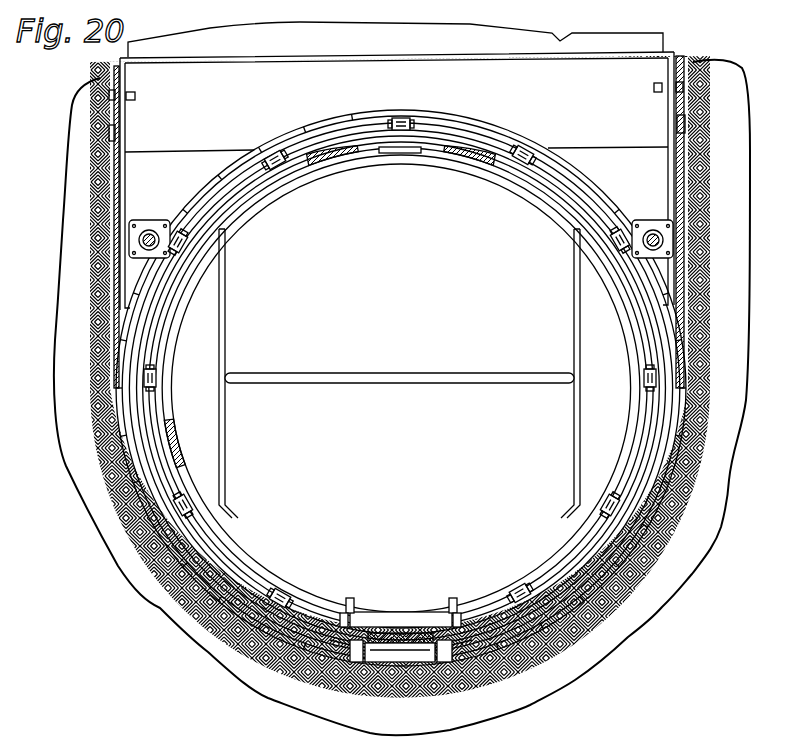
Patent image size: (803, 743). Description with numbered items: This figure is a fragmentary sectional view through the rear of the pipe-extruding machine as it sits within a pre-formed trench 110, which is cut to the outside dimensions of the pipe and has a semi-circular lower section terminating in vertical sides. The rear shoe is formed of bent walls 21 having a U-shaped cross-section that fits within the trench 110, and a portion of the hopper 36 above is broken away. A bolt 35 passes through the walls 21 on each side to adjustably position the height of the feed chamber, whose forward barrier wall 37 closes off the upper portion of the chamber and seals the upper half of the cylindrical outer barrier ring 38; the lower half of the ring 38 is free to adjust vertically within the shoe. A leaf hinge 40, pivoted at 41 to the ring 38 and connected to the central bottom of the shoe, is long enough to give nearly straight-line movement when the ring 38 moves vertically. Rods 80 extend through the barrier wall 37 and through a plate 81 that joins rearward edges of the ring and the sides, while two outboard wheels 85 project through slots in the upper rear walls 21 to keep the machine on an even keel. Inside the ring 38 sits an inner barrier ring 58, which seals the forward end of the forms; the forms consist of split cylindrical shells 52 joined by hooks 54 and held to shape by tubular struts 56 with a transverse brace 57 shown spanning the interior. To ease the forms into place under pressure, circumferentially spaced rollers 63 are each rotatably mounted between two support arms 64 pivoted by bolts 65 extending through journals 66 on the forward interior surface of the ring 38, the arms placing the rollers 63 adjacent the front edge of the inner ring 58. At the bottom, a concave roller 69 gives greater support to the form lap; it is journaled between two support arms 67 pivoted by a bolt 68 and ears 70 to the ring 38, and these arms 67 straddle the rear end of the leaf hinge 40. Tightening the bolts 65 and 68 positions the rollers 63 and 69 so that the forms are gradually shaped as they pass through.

The trench 110 is at (687, 60).
The top plate 36 is at (572, 40).
The bolt 35 is at (135, 94).
The forward barrier wall 37 is at (262, 109).
The outer barrier ring 38 is at (505, 137).
The outboard wheels 85 is at (117, 132).
The plate 81 is at (163, 179).
The walls 21 is at (121, 194).
The rods 80 is at (152, 235).
The support arms 64 is at (400, 118).
The bolts 65 is at (418, 126).
The journals 66 is at (272, 152).
The rollers 63 is at (279, 172).
The inner barrier ring 58 is at (230, 210).
The hooks 54 is at (396, 156).
The tubular struts 56 is at (451, 162).
The frame bar 57 is at (226, 342).
The split cylindrical shells 52 is at (172, 397).
The ears 70 is at (349, 598).
The support arms 67 is at (358, 613).
The concave roller 69 is at (378, 612).
The bolt 68 is at (490, 621).
The pivot 41 is at (350, 652).
The leaf hinge 40 is at (440, 648).